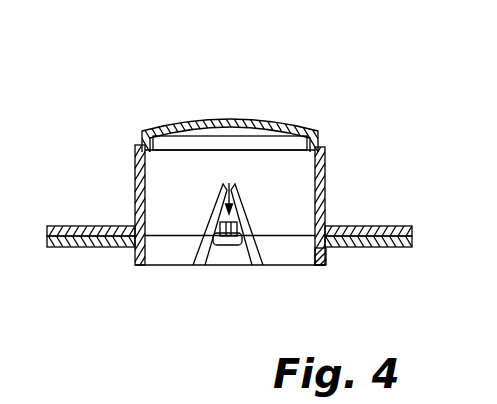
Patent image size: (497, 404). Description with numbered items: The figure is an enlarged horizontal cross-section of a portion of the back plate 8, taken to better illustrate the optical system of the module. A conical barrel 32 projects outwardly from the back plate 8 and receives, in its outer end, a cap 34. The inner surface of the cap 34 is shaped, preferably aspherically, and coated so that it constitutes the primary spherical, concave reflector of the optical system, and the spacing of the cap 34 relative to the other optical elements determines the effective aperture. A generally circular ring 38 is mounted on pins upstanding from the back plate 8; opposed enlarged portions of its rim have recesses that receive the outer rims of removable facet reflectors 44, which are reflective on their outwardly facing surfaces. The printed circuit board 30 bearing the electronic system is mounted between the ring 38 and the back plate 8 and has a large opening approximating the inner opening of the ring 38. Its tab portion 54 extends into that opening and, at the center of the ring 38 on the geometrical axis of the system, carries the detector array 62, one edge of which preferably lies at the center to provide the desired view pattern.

The back plate 8 is at (73, 225).
The printed circuit board 30 is at (85, 248).
The conical barrel 32 is at (140, 175).
The cap 34 is at (207, 121).
The ring 38 is at (327, 255).
The facet reflectors 44 is at (247, 213).
The tab portion 54 is at (227, 245).
The detector array 62 is at (229, 183).